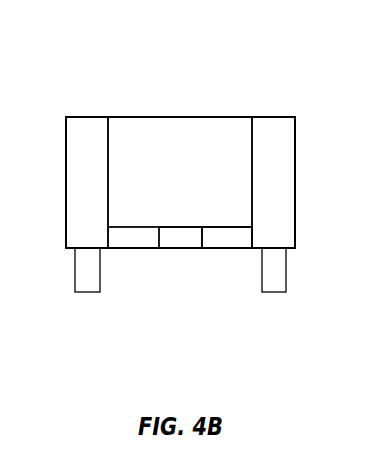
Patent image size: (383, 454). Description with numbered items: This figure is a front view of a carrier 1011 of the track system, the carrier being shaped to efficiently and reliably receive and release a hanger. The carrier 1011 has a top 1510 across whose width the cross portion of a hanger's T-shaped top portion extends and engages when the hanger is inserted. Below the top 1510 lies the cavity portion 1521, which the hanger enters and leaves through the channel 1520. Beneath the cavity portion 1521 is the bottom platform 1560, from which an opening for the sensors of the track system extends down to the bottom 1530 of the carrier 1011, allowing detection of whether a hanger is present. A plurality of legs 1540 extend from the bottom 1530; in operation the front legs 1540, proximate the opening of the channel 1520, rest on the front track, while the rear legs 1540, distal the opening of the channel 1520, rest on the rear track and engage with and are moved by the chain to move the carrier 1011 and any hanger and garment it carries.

The carrier 1011 is at (147, 113).
The top 1510 is at (285, 113).
The cavity portion 1521 is at (198, 143).
The channel 1520 is at (168, 252).
The bottom platform 1560 is at (222, 249).
The bottom 1530 is at (243, 288).
The legs 1540 is at (86, 282).